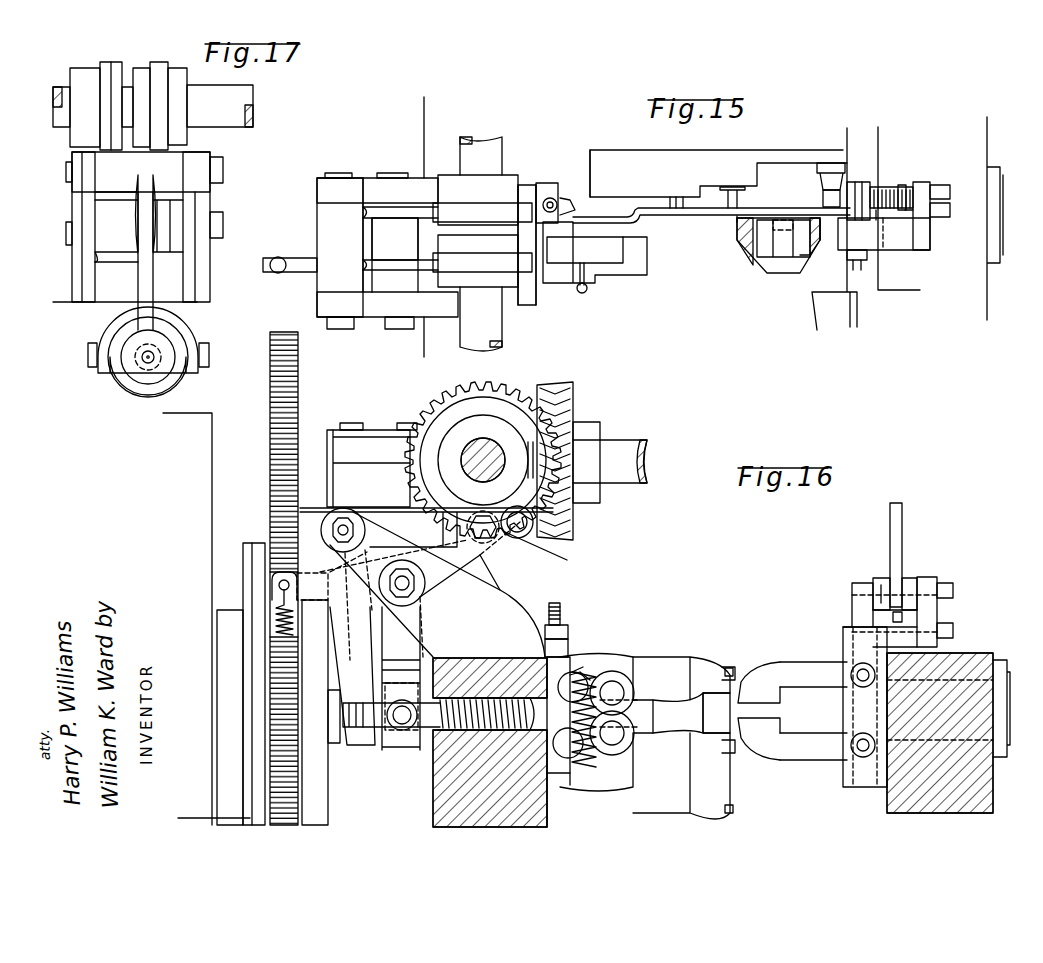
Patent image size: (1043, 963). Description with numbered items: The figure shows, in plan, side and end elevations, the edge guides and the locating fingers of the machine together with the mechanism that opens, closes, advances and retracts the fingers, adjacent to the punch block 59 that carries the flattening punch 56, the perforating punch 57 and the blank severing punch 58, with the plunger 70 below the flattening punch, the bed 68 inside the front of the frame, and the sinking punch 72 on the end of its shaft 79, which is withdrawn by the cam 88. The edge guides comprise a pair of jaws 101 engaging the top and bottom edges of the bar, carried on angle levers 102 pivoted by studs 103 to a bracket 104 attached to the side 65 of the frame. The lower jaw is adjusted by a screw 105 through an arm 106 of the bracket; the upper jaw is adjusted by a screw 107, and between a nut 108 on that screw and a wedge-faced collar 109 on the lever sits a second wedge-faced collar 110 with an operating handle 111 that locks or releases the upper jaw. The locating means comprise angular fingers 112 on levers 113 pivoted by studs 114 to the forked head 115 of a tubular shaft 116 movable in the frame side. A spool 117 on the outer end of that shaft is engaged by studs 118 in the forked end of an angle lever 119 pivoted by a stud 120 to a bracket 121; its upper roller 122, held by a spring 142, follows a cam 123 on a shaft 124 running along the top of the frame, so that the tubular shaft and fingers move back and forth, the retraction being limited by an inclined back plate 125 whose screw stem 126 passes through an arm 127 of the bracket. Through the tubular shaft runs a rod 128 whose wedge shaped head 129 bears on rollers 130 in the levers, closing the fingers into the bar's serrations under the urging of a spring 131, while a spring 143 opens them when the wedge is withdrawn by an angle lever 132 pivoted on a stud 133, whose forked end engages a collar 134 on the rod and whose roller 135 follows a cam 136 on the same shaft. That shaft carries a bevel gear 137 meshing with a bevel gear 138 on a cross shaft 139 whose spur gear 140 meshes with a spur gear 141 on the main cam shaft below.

In FIG. 15, the flattening punch 56 is at (822, 186).
In FIG. 15, the perforating punch 57 is at (745, 196).
In FIG. 15, the blank severing punch 58 is at (676, 197).
In FIG. 15, the punch block 59 is at (619, 173).
In FIG. 15, the sides of the frame 65 is at (973, 218).
In FIG. 16, the sides of the frame 65 is at (983, 655).
In FIG. 15, the bed 68 is at (612, 260).
In FIG. 15, the plunger 70 is at (823, 199).
In FIG. 15, the sinking punch 72 is at (750, 268).
In FIG. 15, the shaft 79 is at (778, 265).
In FIG. 16, the cam 88 is at (250, 540).
In FIG. 15, the jaws 101 is at (730, 223).
In FIG. 16, the jaws 101 is at (751, 711).
In FIG. 15, the angle levers 102 is at (823, 258).
In FIG. 16, the angle levers 102 is at (813, 711).
In FIG. 15, the studs 103 is at (858, 268).
In FIG. 16, the studs 103 is at (850, 668).
In FIG. 15, the bracket 104 is at (893, 250).
In FIG. 16, the bracket 104 is at (855, 787).
In FIG. 15, the screw 105 is at (890, 185).
In FIG. 16, the screw 105 is at (852, 612).
In FIG. 15, the arm of the bracket 106 is at (926, 176).
In FIG. 16, the arm of the bracket 106 is at (938, 605).
In FIG. 15, the screw 107 is at (935, 225).
In FIG. 16, the screw 107 is at (945, 588).
In FIG. 15, the nut 108 is at (905, 185).
In FIG. 16, the nut 108 is at (912, 578).
In FIG. 15, the collar 109 is at (872, 186).
In FIG. 16, the collar 109 is at (875, 578).
In FIG. 15, the collar 110 is at (872, 225).
In FIG. 16, the collar 110 is at (878, 578).
In FIG. 15, the operating handle 111 is at (910, 240).
In FIG. 16, the operating handle 111 is at (902, 510).
In FIG. 16, the angular fingers 112 is at (712, 713).
In FIG. 15, the levers 113 is at (673, 216).
In FIG. 16, the levers 113 is at (683, 738).
In FIG. 16, the studs 114 is at (625, 728).
In FIG. 15, the forked head 115 is at (612, 263).
In FIG. 16, the forked head 115 is at (617, 672).
In FIG. 16, the tubular shaft 116 is at (480, 662).
In FIG. 17, the spool 117 is at (118, 378).
In FIG. 16, the spool 117 is at (374, 750).
In FIG. 17, the studs 118 is at (88, 362).
In FIG. 16, the studs 118 is at (400, 732).
In FIG. 17, the angle lever 119 is at (153, 300).
In FIG. 15, the angle lever 119 is at (398, 260).
In FIG. 16, the angle lever 119 is at (401, 678).
In FIG. 17, the stud 120 is at (66, 231).
In FIG. 15, the stud 120 is at (397, 329).
In FIG. 16, the stud 120 is at (410, 588).
In FIG. 17, the bracket 121 is at (82, 276).
In FIG. 15, the bracket 121 is at (525, 178).
In FIG. 16, the bracket 121 is at (498, 583).
In FIG. 16, the roller 122 is at (535, 535).
In FIG. 17, the cam 123 is at (159, 66).
In FIG. 15, the cam 123 is at (482, 261).
In FIG. 16, the cam 123 is at (557, 500).
In FIG. 17, the shaft 124 is at (153, 106).
In FIG. 15, the shaft 124 is at (481, 244).
In FIG. 16, the shaft 124 is at (462, 452).
In FIG. 15, the inclined back plate 125 is at (552, 190).
In FIG. 16, the inclined back plate 125 is at (556, 780).
In FIG. 15, the screw stem 126 is at (558, 200).
In FIG. 16, the screw stem 126 is at (562, 610).
In FIG. 15, the arm of the bracket 127 is at (578, 218).
In FIG. 16, the arm of the bracket 127 is at (568, 638).
In FIG. 17, the rod 128 is at (150, 397).
In FIG. 16, the rod 128 is at (528, 662).
In FIG. 16, the wedge shaped head 129 is at (508, 755).
In FIG. 15, the rollers 130 is at (590, 292).
In FIG. 16, the rollers 130 is at (575, 672).
In FIG. 16, the spring 131 is at (465, 748).
In FIG. 17, the angle lever 132 is at (143, 283).
In FIG. 15, the angle lever 132 is at (368, 222).
In FIG. 16, the angle lever 132 is at (352, 676).
In FIG. 17, the stud 133 is at (66, 173).
In FIG. 15, the stud 133 is at (340, 329).
In FIG. 16, the stud 133 is at (346, 522).
In FIG. 17, the collar 134 is at (170, 375).
In FIG. 16, the collar 134 is at (334, 743).
In FIG. 16, the roller 135 is at (487, 506).
In FIG. 17, the cam 136 is at (110, 66).
In FIG. 15, the cam 136 is at (482, 200).
In FIG. 16, the cam 136 is at (502, 450).
In FIG. 16, the bevel gear 137 is at (532, 392).
In FIG. 16, the bevel gear 138 is at (573, 516).
In FIG. 16, the shaft 139 is at (650, 460).
In FIG. 16, the spur gear 140 is at (272, 427).
In FIG. 16, the spur gear 141 is at (275, 703).
In FIG. 15, the spring 142 is at (296, 254).
In FIG. 16, the spring 142 is at (275, 637).
In FIG. 16, the spring 143 is at (645, 752).